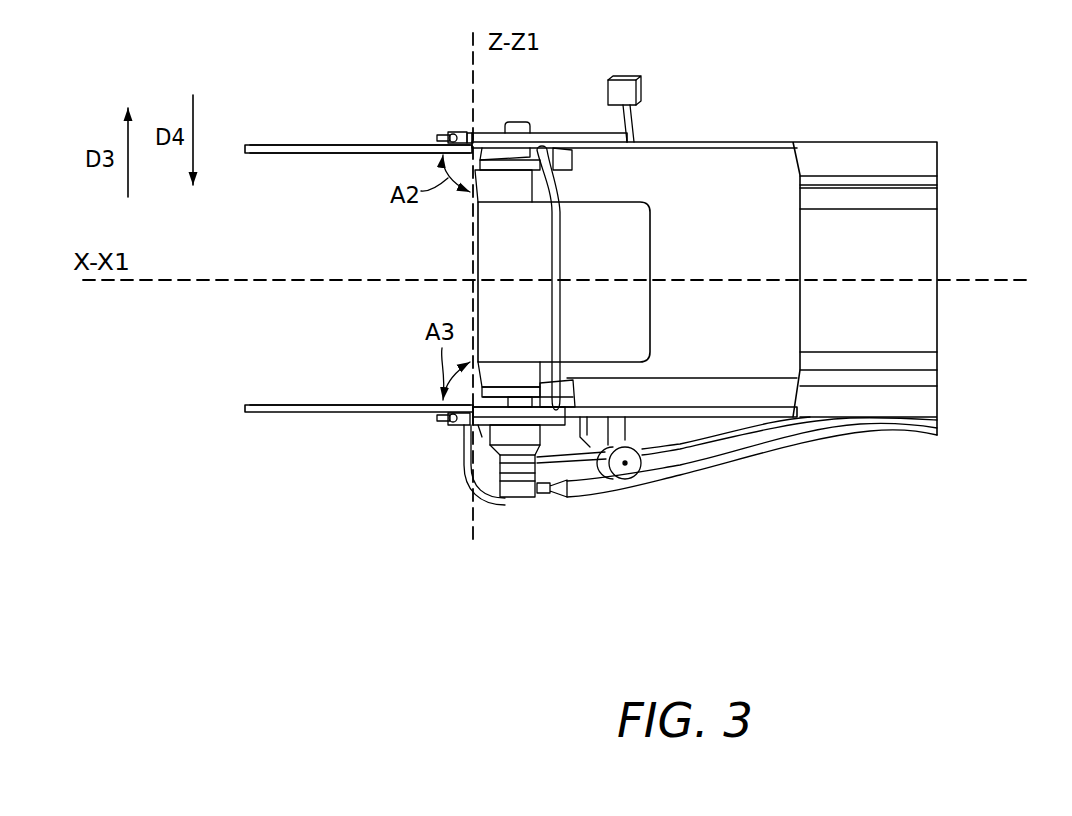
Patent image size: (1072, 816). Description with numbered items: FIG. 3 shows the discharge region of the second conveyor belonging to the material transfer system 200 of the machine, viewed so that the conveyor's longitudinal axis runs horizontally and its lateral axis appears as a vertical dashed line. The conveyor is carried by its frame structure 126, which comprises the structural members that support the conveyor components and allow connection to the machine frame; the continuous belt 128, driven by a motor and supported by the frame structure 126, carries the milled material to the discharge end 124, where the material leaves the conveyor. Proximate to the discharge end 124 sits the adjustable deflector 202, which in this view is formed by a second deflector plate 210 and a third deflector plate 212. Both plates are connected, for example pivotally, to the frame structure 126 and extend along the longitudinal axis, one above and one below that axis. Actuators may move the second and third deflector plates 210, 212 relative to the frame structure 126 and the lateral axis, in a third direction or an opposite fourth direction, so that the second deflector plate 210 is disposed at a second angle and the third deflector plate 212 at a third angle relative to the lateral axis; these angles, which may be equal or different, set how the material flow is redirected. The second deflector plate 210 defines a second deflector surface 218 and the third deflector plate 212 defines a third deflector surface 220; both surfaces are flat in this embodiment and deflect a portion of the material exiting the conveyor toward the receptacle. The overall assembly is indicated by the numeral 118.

The vehicle body / tractor 118 is at (955, 108).
The discharge end 124 is at (464, 245).
The frame structure 126 is at (837, 160).
The continuous belt 128 is at (865, 248).
The material transfer system 200 is at (415, 127).
The adjustable deflector 202 is at (343, 127).
The second deflector plate 210 is at (378, 145).
The second deflector surface 218 is at (330, 152).
The third deflector plate 212 is at (345, 403).
The third deflector surface 220 is at (395, 403).